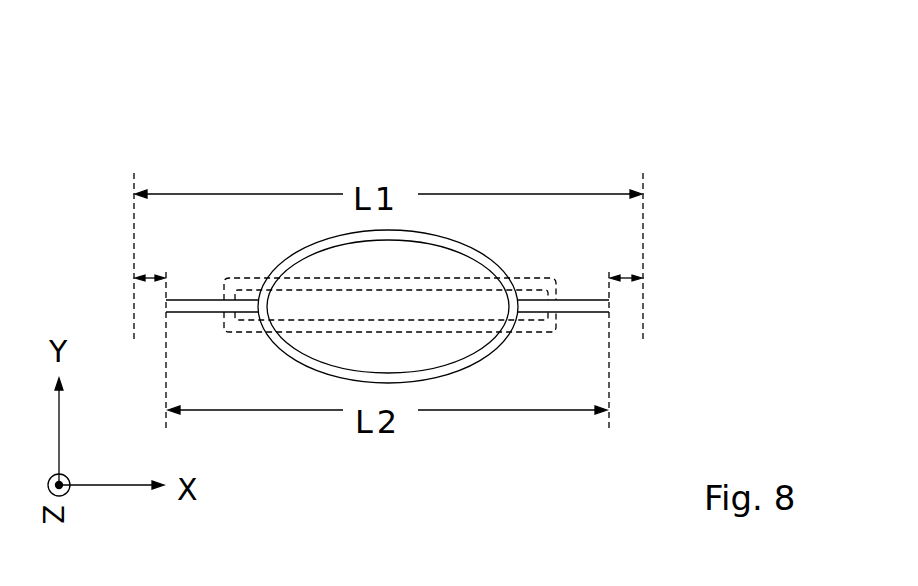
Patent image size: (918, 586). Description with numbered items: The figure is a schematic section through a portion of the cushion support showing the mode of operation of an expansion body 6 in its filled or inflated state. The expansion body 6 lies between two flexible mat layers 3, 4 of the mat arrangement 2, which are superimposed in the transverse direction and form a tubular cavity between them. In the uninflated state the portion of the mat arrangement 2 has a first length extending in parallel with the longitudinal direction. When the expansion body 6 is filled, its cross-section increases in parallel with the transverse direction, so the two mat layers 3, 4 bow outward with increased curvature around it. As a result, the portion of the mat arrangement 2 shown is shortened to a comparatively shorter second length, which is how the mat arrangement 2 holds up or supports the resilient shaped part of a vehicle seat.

The mat arrangement 2 is at (618, 136).
The first mat layer 3 is at (572, 292).
The second mat layer 4 is at (578, 321).
The expansion body 6 is at (335, 308).